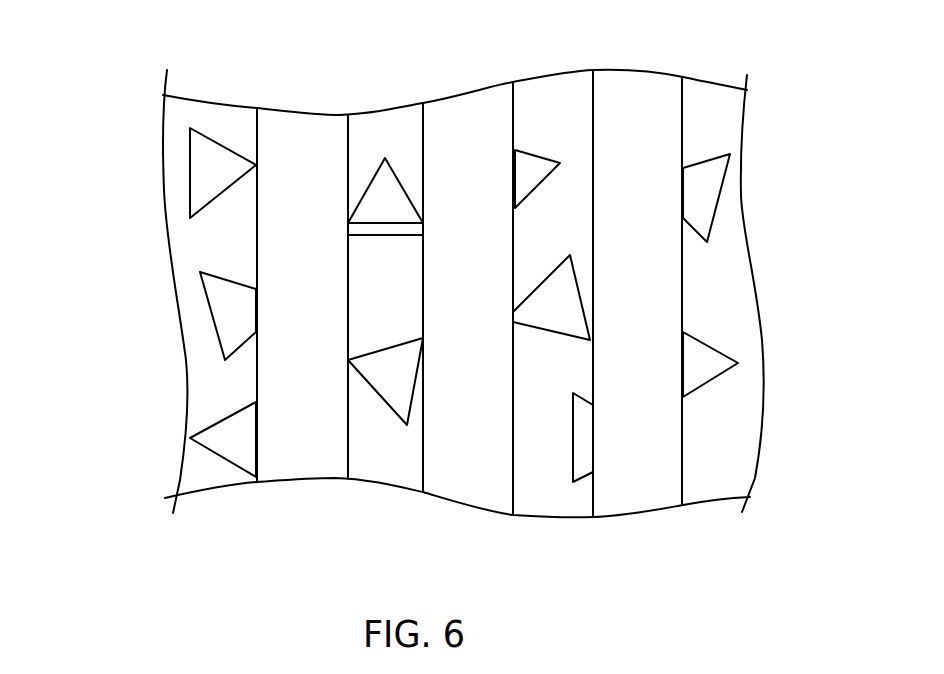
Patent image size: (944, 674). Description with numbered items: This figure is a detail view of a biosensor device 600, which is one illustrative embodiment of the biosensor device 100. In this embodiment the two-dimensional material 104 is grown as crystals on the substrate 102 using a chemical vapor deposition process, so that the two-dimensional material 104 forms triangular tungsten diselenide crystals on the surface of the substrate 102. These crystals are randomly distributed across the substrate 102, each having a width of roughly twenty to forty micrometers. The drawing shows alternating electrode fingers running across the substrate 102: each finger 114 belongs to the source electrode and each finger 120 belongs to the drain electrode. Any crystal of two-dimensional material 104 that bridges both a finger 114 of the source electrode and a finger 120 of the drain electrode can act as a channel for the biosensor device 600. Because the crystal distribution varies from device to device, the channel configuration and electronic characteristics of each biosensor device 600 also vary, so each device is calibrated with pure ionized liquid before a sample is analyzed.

The biosensor device 600 is at (856, 84).
The biosensor device 100 is at (70, 73).
The substrate 102 is at (225, 137).
The 2D material 104 is at (203, 163).
The finger of the source electrode 114 is at (468, 127).
The finger of the drain electrode 120 is at (287, 443).